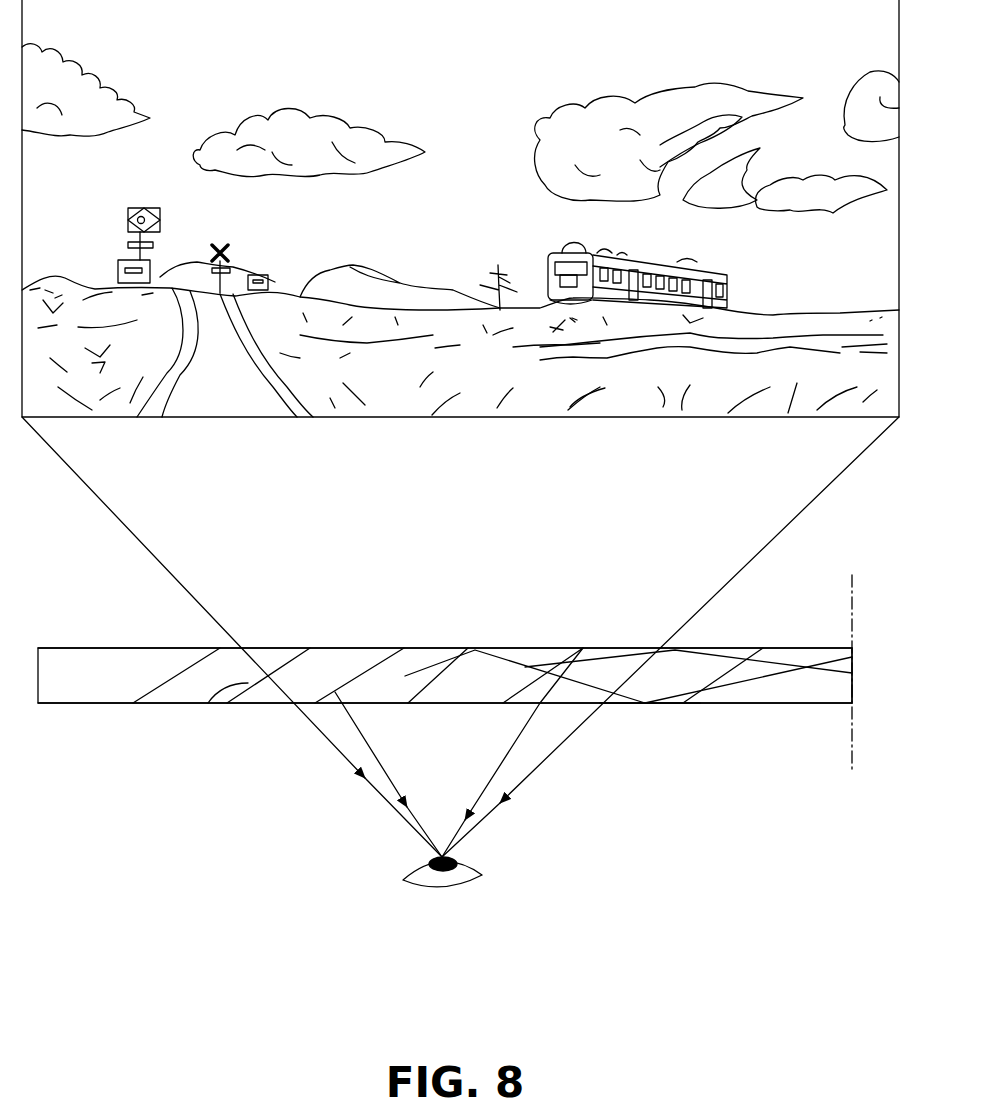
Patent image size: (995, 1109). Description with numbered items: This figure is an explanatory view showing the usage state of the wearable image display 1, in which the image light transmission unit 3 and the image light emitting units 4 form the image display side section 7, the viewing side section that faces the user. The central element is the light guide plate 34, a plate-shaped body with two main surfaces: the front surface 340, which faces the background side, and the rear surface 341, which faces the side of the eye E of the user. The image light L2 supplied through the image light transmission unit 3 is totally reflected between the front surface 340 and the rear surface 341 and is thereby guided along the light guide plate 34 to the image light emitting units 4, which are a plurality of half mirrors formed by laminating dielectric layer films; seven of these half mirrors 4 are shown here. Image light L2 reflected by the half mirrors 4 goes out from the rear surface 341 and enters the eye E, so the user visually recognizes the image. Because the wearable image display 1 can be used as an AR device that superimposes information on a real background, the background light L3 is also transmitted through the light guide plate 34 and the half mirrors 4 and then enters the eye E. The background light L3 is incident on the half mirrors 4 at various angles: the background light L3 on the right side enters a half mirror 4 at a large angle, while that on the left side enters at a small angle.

The wearable image display 1 is at (668, 743).
The image light transmission unit 3 is at (90, 640).
The image light emitting units (half mirrors) 4 is at (370, 672).
The image display side section 7 is at (762, 715).
The light guide plate 34 is at (65, 703).
The front surface 340 is at (788, 650).
The rear surface 341 is at (806, 703).
The eye E is at (443, 887).
The image light L2 is at (427, 667).
The background light L3 is at (139, 540).